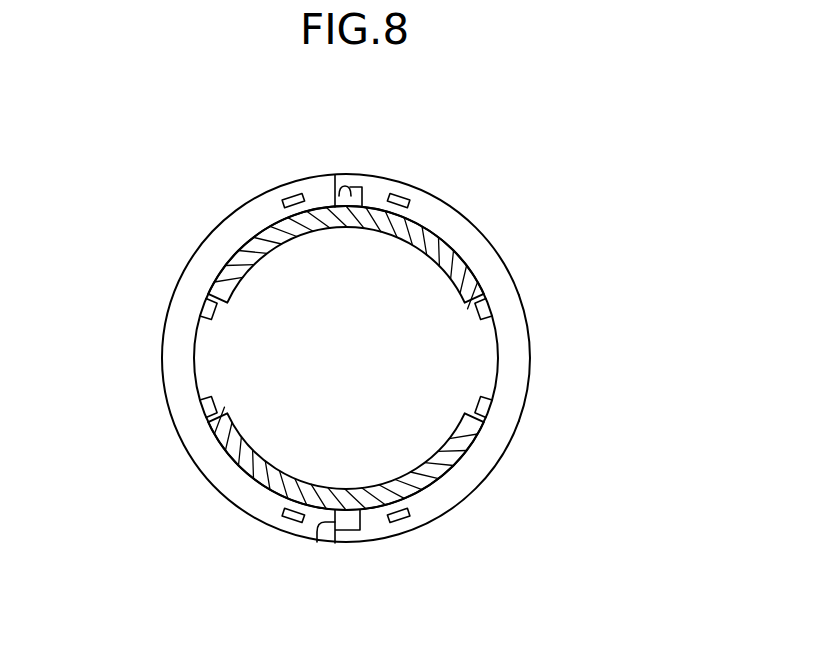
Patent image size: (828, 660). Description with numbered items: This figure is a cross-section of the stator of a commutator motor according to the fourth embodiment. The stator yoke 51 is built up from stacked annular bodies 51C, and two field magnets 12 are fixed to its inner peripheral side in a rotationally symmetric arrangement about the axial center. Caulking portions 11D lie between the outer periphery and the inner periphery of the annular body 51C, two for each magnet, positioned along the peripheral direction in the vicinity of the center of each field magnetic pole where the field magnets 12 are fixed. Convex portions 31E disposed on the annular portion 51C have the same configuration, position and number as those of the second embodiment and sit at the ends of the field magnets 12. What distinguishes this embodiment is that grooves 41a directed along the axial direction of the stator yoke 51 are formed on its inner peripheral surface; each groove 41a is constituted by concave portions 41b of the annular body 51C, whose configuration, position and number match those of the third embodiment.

The stator yoke 51 is at (448, 202).
The annular body 51C is at (515, 362).
The field magnet 12 is at (450, 242).
The convex portion 31E is at (200, 318).
The caulking portion 11D is at (298, 194).
The groove 41a is at (335, 176).
The concave portion 41b is at (353, 187).